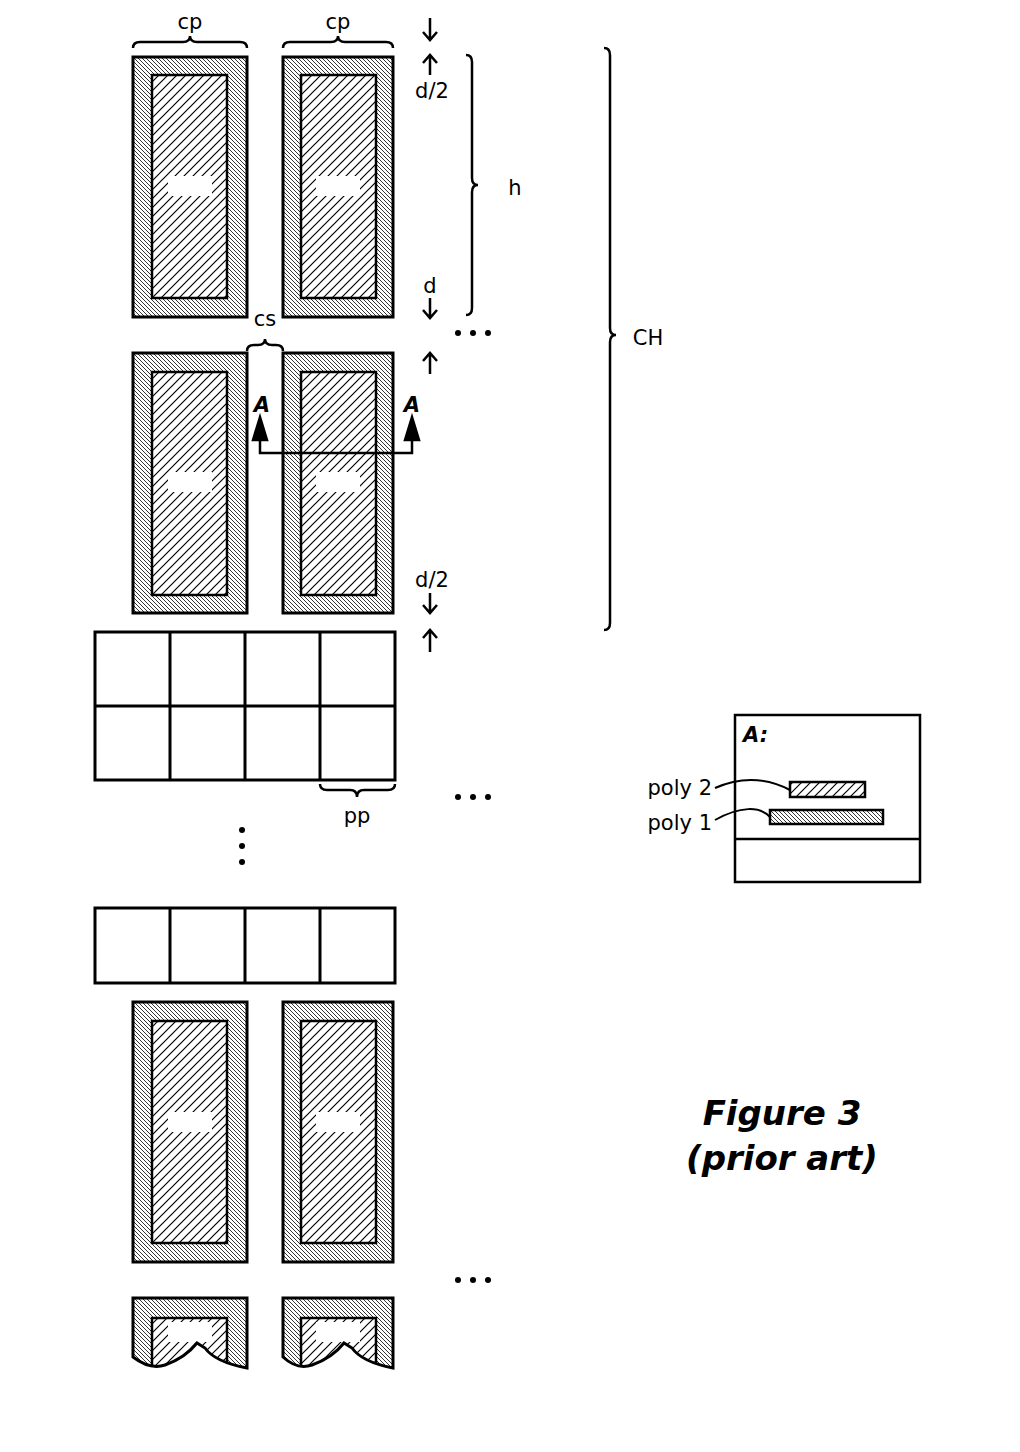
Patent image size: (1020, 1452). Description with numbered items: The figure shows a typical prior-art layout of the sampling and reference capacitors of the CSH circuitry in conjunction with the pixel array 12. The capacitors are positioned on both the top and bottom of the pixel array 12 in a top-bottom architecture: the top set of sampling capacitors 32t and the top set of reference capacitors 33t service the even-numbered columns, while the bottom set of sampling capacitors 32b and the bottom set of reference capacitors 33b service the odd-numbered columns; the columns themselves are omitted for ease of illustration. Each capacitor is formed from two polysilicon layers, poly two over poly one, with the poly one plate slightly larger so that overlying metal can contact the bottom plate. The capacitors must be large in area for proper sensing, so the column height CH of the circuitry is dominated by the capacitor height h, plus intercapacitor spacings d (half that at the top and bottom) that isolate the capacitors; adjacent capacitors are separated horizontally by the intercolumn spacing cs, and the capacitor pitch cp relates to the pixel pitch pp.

The top set of reference capacitors 33t is at (73, 60).
The top set of sampling capacitors 32t is at (73, 354).
The pixel array 12 is at (73, 632).
The bottom set of sampling capacitors 32b is at (73, 1011).
The bottom set of reference capacitors 33b is at (73, 1302).